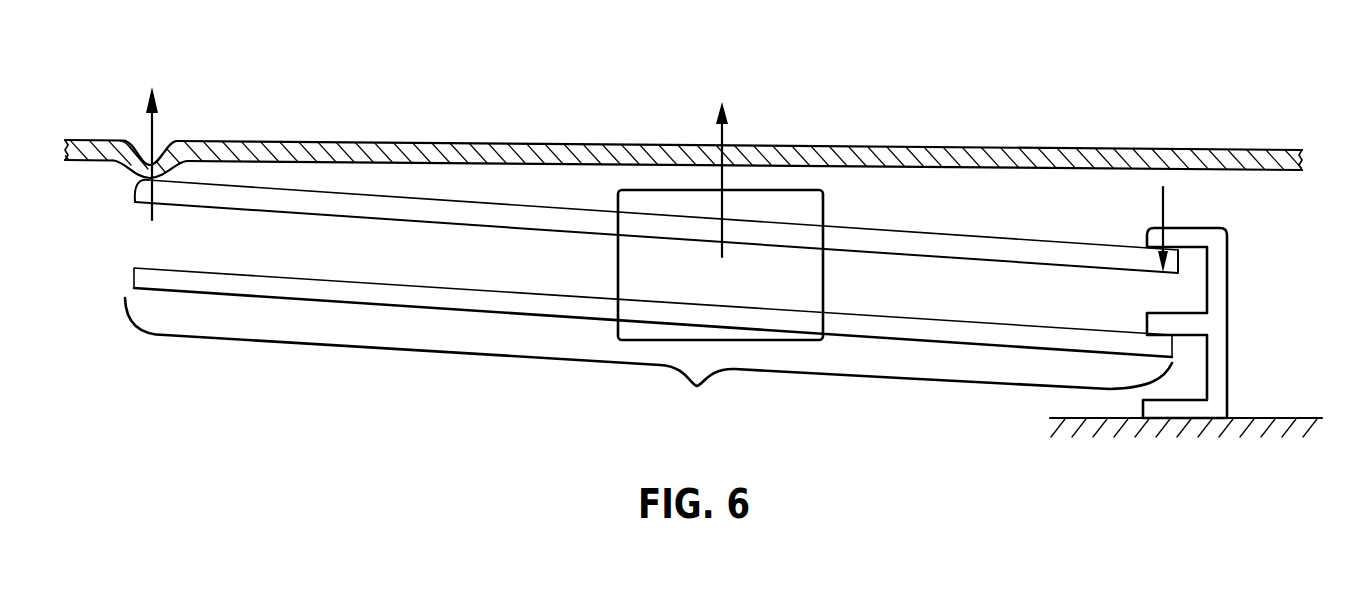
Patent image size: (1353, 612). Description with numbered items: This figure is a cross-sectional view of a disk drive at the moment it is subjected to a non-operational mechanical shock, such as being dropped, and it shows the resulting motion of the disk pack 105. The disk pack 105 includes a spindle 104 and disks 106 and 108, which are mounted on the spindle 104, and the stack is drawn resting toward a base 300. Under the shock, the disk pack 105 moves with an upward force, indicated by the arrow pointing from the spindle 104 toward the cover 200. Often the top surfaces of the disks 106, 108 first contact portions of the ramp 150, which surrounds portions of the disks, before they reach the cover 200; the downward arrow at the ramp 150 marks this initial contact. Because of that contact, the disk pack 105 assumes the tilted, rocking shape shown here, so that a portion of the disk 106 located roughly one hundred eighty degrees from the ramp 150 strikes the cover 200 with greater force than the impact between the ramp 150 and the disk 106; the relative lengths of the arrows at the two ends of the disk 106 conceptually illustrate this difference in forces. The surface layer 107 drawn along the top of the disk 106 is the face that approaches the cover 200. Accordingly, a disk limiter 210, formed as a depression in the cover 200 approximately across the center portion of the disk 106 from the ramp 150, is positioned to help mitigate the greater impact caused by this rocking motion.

The spindle 104 is at (617, 328).
The disk pack 105 is at (648, 360).
The disk 106 is at (962, 253).
The upper surface layer 107 is at (510, 198).
The disk 108 is at (948, 338).
The ramp 150 is at (1227, 268).
The cover 200 is at (930, 145).
The disk limiter 210 is at (128, 175).
The base support 300 is at (1272, 418).